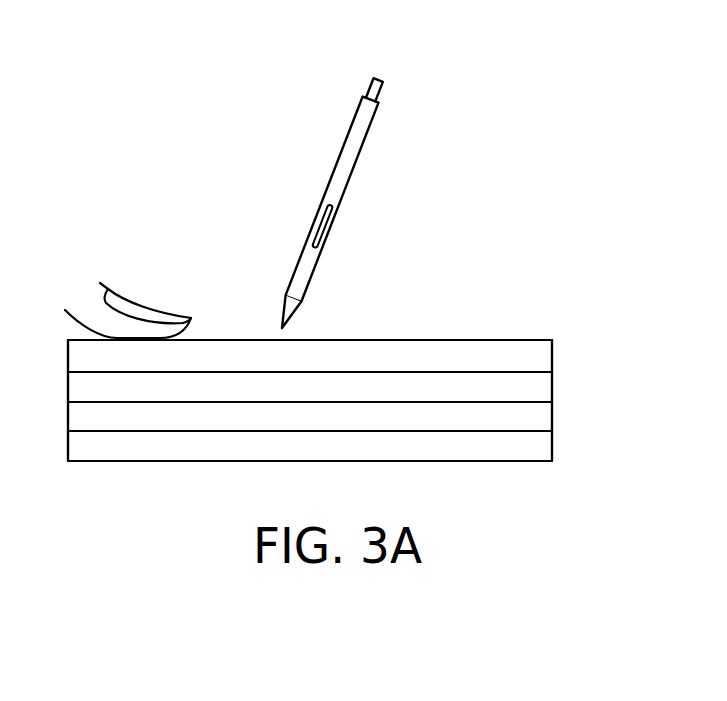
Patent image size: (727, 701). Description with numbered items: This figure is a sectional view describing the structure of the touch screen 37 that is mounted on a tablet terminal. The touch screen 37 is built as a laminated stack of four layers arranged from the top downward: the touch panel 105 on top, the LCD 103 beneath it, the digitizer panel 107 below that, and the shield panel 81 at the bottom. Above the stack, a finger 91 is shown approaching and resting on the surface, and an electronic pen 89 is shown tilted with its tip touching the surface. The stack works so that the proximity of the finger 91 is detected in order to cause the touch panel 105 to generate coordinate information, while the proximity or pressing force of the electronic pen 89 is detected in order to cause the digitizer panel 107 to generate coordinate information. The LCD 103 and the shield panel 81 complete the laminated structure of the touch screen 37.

The electronic pen 89 is at (380, 79).
The finger 91 is at (108, 291).
The touch screen 37 is at (500, 243).
The touch panel 105 is at (552, 340).
The LCD 103 is at (553, 377).
The digitizer panel 107 is at (553, 414).
The shield panel 81 is at (553, 453).